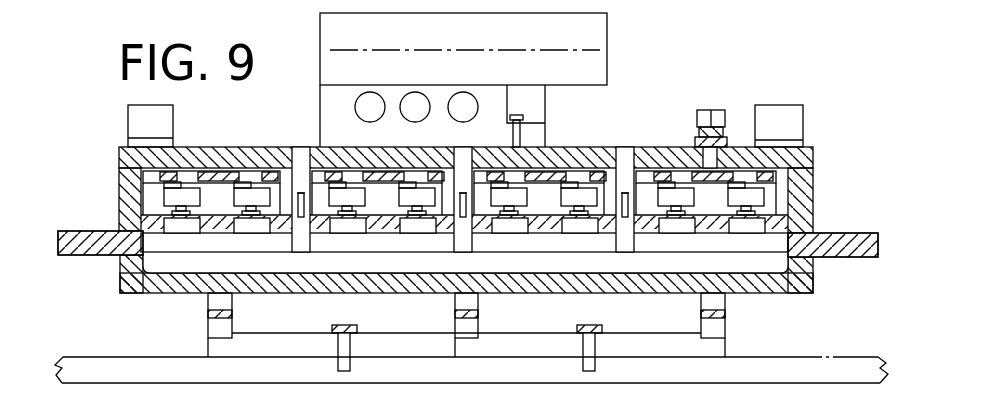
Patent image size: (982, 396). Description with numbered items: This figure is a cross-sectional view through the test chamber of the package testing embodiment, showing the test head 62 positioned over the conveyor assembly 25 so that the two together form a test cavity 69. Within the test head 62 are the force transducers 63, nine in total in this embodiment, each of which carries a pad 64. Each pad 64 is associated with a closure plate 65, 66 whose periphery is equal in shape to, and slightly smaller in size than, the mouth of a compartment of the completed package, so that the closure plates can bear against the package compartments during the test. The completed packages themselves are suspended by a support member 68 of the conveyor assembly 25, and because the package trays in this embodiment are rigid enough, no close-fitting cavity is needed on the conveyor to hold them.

The conveyor assembly 25 is at (807, 297).
The test head 62 is at (805, 148).
The force transducer 63 is at (762, 198).
The pad 64 is at (757, 218).
The closure plate 65 is at (165, 222).
The closure plate 66 is at (275, 222).
The support member 68 is at (757, 240).
The test cavity 69 is at (645, 182).